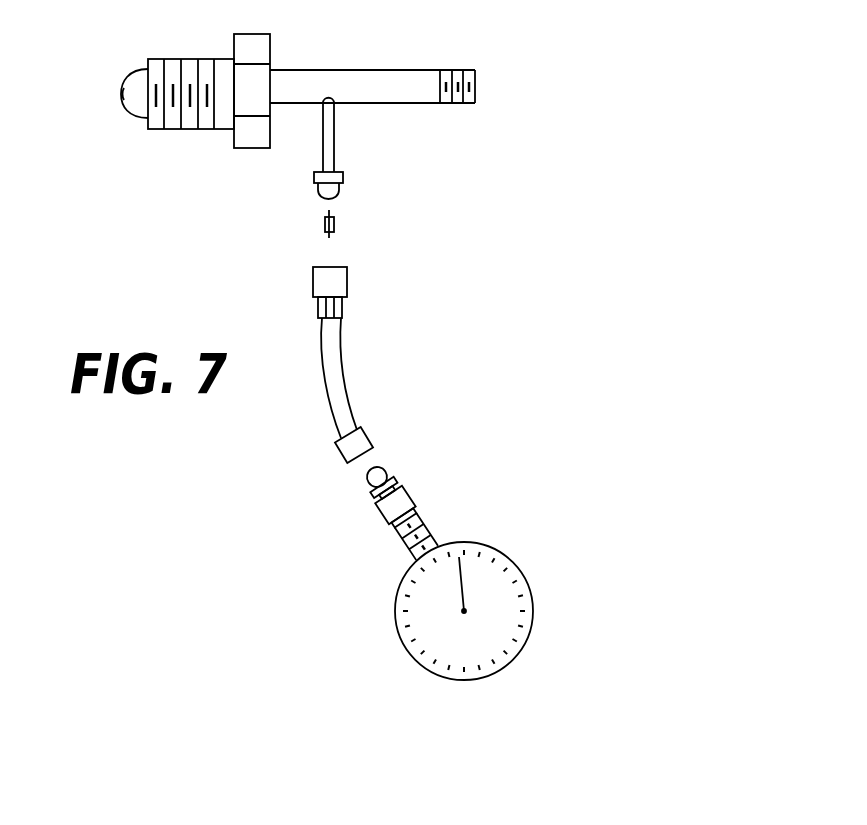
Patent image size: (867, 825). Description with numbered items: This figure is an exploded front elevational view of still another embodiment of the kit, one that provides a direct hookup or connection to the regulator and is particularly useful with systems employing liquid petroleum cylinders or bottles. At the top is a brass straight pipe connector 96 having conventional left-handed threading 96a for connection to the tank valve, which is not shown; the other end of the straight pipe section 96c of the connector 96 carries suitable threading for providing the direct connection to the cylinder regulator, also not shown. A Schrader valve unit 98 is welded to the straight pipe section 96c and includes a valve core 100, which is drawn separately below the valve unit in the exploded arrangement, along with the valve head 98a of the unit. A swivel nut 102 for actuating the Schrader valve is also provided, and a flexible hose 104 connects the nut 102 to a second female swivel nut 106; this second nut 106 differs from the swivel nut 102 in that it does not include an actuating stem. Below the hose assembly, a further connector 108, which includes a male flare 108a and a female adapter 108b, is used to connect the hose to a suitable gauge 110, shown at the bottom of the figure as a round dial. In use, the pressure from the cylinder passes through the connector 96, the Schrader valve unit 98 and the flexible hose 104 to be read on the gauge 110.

The brass straight pipe connector 96 is at (316, 95).
The left-handed threading 96a is at (187, 130).
The straight pipe section 96c is at (428, 99).
The Schrader valve unit 98 is at (371, 150).
The pin head 98a is at (339, 192).
The valve core 100 is at (334, 224).
The swivel nut 102 is at (350, 286).
The flexible hose 104 is at (342, 350).
The second female swivel nut 106 is at (371, 431).
The further connector 108 is at (367, 529).
The male flare 108a is at (367, 479).
The female adapter 108b is at (387, 513).
The gauge 110 is at (486, 546).